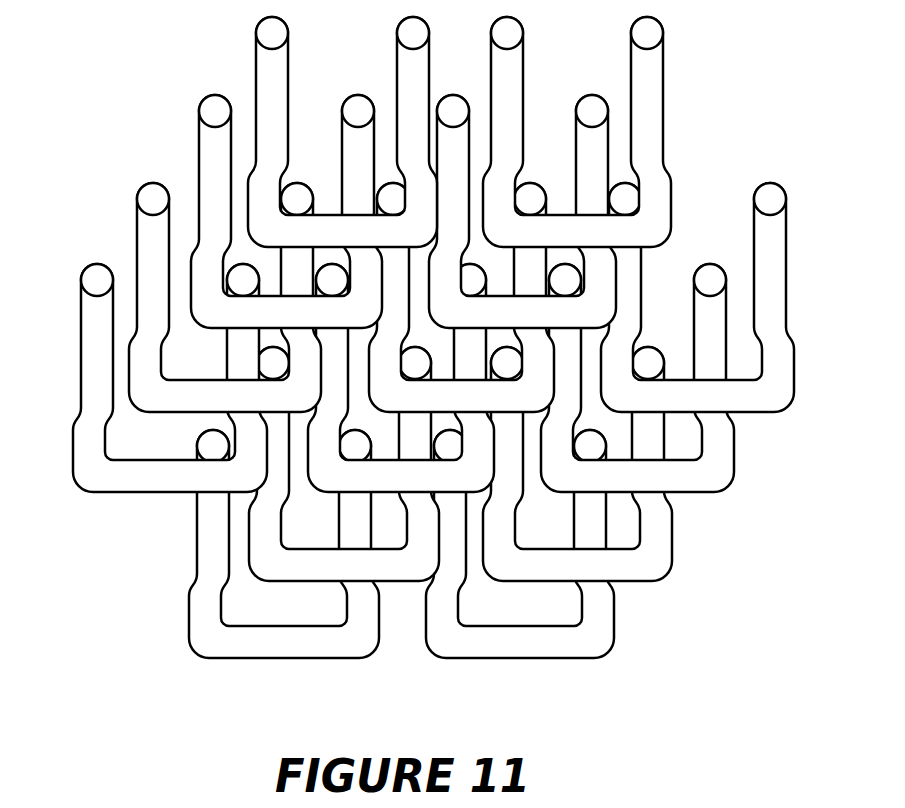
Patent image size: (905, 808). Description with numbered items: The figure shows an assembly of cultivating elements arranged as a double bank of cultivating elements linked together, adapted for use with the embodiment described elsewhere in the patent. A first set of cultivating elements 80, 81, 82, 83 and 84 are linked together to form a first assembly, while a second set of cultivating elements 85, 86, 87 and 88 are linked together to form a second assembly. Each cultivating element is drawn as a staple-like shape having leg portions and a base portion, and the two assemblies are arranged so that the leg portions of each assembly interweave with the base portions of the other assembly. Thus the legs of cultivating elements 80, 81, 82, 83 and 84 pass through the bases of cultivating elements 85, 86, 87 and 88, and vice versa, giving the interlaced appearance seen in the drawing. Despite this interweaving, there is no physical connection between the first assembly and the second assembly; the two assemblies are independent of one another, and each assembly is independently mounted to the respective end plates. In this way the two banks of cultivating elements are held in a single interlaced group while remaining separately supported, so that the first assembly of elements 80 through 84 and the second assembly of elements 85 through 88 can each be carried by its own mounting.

The cultivating element 80 is at (162, 477).
The cultivating element 81 is at (378, 478).
The cultivating element 82 is at (693, 465).
The cultivating element 83 is at (243, 307).
The cultivating element 84 is at (568, 303).
The cultivating element 85 is at (330, 562).
The cultivating element 86 is at (549, 559).
The cultivating element 87 is at (507, 395).
The cultivating element 88 is at (270, 396).